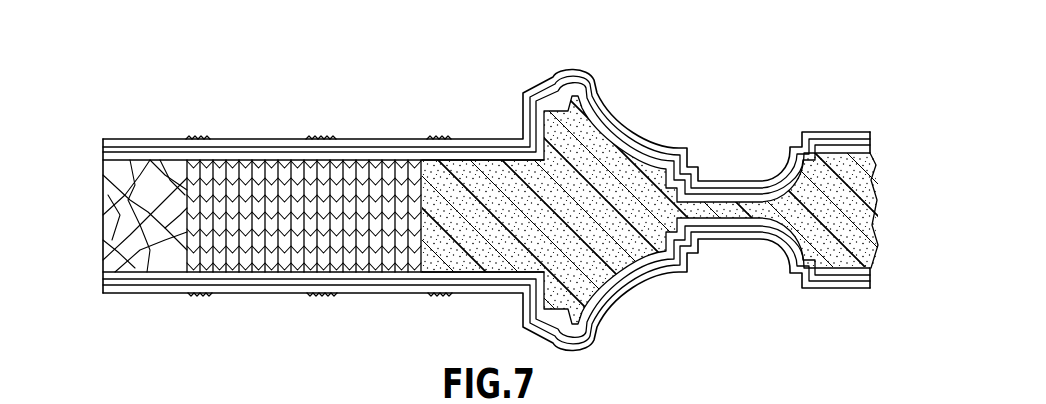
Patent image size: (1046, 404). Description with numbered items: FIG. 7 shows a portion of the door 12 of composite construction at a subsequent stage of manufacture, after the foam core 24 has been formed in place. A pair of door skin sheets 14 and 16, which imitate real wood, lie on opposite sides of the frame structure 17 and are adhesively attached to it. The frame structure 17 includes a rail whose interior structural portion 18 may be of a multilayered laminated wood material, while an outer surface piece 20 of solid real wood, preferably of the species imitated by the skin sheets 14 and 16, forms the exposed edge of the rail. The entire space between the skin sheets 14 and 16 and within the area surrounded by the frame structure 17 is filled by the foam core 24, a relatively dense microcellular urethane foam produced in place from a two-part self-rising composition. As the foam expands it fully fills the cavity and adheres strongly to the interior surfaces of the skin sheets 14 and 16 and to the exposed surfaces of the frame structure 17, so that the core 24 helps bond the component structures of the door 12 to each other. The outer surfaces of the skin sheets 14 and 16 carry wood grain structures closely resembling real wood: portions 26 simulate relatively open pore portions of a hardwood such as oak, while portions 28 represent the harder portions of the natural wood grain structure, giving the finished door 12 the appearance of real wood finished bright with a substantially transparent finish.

The door 12 is at (672, 77).
The door skin sheet 14 is at (103, 150).
The door skin sheet 16 is at (103, 283).
The frame structure 17 is at (103, 235).
The interior structural portion 18 is at (173, 273).
The outer surface piece 20 is at (102, 197).
The foam core 24 is at (496, 165).
The open pore portions 26 is at (200, 137).
The harder grain portions 28 is at (380, 137).